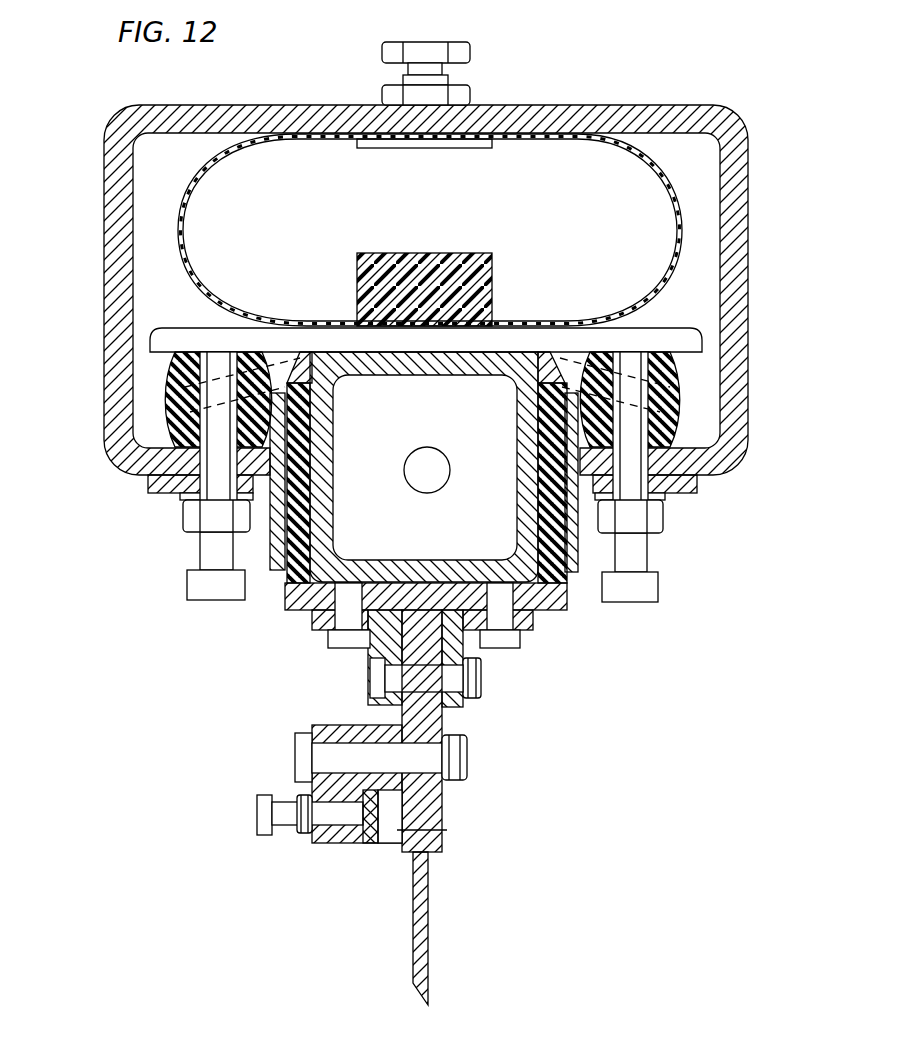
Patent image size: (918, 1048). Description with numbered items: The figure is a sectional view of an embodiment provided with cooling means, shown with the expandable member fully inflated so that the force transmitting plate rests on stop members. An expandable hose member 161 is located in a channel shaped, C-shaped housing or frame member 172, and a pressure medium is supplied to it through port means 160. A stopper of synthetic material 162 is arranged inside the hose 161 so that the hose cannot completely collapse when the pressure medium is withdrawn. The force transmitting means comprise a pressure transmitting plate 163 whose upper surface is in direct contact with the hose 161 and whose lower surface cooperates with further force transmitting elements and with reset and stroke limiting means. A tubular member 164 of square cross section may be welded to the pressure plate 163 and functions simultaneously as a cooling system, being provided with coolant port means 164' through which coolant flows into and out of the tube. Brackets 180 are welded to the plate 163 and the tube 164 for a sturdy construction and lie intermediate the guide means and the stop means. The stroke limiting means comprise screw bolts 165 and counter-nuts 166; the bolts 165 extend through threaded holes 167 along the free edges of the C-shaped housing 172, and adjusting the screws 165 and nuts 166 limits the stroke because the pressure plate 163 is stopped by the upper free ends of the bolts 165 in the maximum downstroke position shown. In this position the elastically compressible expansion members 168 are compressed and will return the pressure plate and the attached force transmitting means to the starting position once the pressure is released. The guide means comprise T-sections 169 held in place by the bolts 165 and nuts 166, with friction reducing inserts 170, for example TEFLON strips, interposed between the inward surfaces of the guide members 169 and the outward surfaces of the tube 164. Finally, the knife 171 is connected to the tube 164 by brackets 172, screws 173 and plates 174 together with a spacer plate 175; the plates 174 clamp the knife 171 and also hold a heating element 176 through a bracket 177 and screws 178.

The port means 160 is at (462, 50).
The expandable hose member 161 is at (672, 205).
The stopper of synthetic material 162 is at (357, 283).
The pressure transmitting plate 163 is at (638, 334).
The tubular member 164 is at (424, 467).
The coolant port means 164' is at (454, 467).
The screw bolts 165 is at (193, 584).
The counter-nuts 166 is at (193, 528).
The threaded holes 167 is at (195, 462).
The elastically compressible expansion members 168 is at (170, 386).
The T-sections 169 is at (278, 568).
The friction reducing inserts 170 is at (308, 410).
The knife 171 is at (427, 918).
The housing or frame member 172 is at (636, 99).
The screws 173 is at (337, 639).
The plates 174 is at (402, 717).
The spacer plate 175 is at (440, 592).
The heating element 176 is at (393, 836).
The bracket 177 is at (350, 839).
The screws 178 is at (302, 761).
The brackets 180 is at (299, 352).